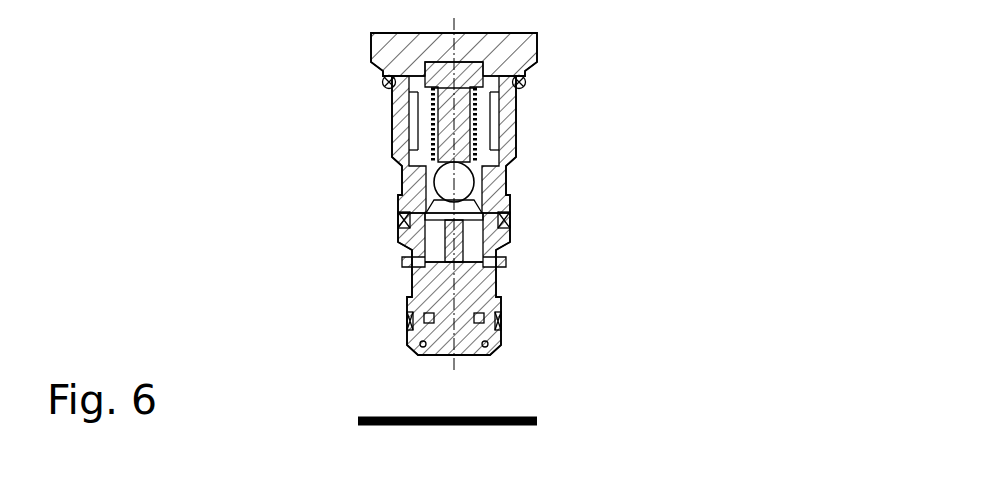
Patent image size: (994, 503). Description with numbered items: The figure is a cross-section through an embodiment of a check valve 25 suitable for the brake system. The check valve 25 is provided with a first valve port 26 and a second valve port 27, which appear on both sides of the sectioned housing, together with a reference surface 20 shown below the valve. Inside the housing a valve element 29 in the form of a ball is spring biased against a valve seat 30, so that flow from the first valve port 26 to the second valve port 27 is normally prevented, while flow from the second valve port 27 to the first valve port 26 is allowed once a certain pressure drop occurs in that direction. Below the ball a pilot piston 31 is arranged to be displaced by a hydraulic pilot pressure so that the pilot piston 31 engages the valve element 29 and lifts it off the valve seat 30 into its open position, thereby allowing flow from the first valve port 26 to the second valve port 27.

The wall / base plate 20 is at (467, 357).
The check valve 25 is at (680, 117).
The first valve port 26 is at (420, 179).
The second valve port 27 is at (413, 258).
The valve element 29 is at (465, 180).
The valve seat 30 is at (472, 191).
The pilot piston 31 is at (445, 330).